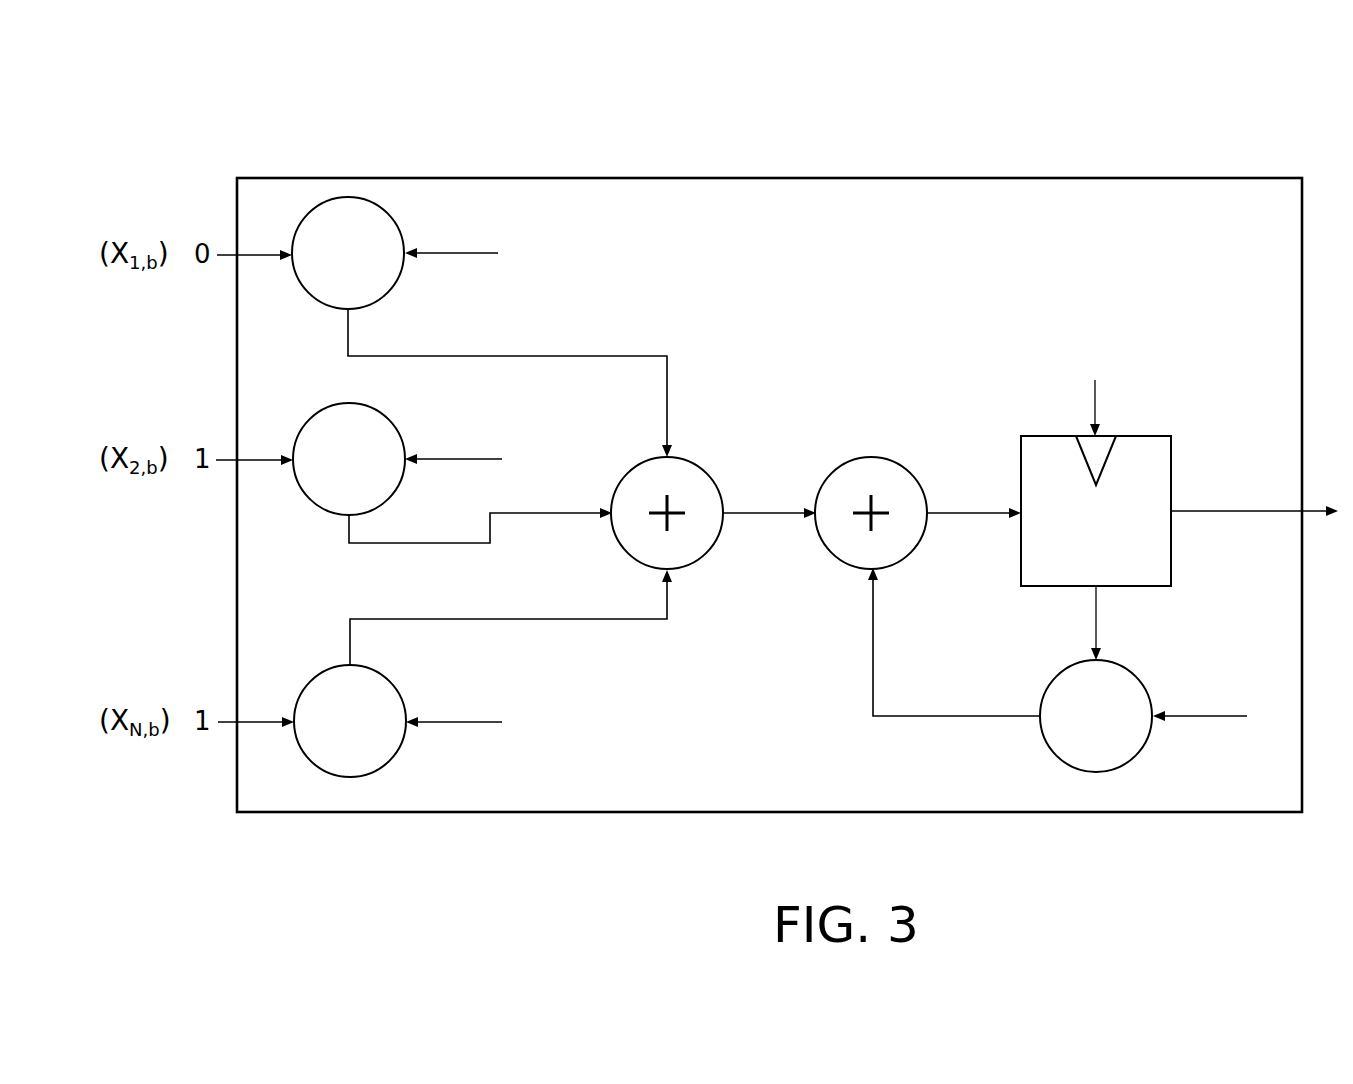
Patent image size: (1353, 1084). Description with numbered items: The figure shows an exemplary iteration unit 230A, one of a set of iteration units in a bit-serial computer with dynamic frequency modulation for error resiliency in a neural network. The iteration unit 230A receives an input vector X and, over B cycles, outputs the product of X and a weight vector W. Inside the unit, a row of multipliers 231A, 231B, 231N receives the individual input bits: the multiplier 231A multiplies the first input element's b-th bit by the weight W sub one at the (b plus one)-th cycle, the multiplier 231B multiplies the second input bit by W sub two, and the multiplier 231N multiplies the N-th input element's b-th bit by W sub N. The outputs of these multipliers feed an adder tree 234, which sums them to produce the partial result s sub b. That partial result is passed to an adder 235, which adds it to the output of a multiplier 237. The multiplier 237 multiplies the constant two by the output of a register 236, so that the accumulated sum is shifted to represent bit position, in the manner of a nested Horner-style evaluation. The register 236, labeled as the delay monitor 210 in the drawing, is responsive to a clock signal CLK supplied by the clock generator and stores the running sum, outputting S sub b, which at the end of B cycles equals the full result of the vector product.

The iteration unit 230A is at (230, 84).
The multiplier 231A is at (482, 327).
The multiplier 231B is at (452, 466).
The multiplier 231N is at (483, 673).
The adder tree 234 is at (711, 496).
The adder 235 is at (912, 501).
The register 236 is at (1164, 502).
The delay monitor 210 is at (1122, 577).
The multiplier 237 is at (1071, 686).